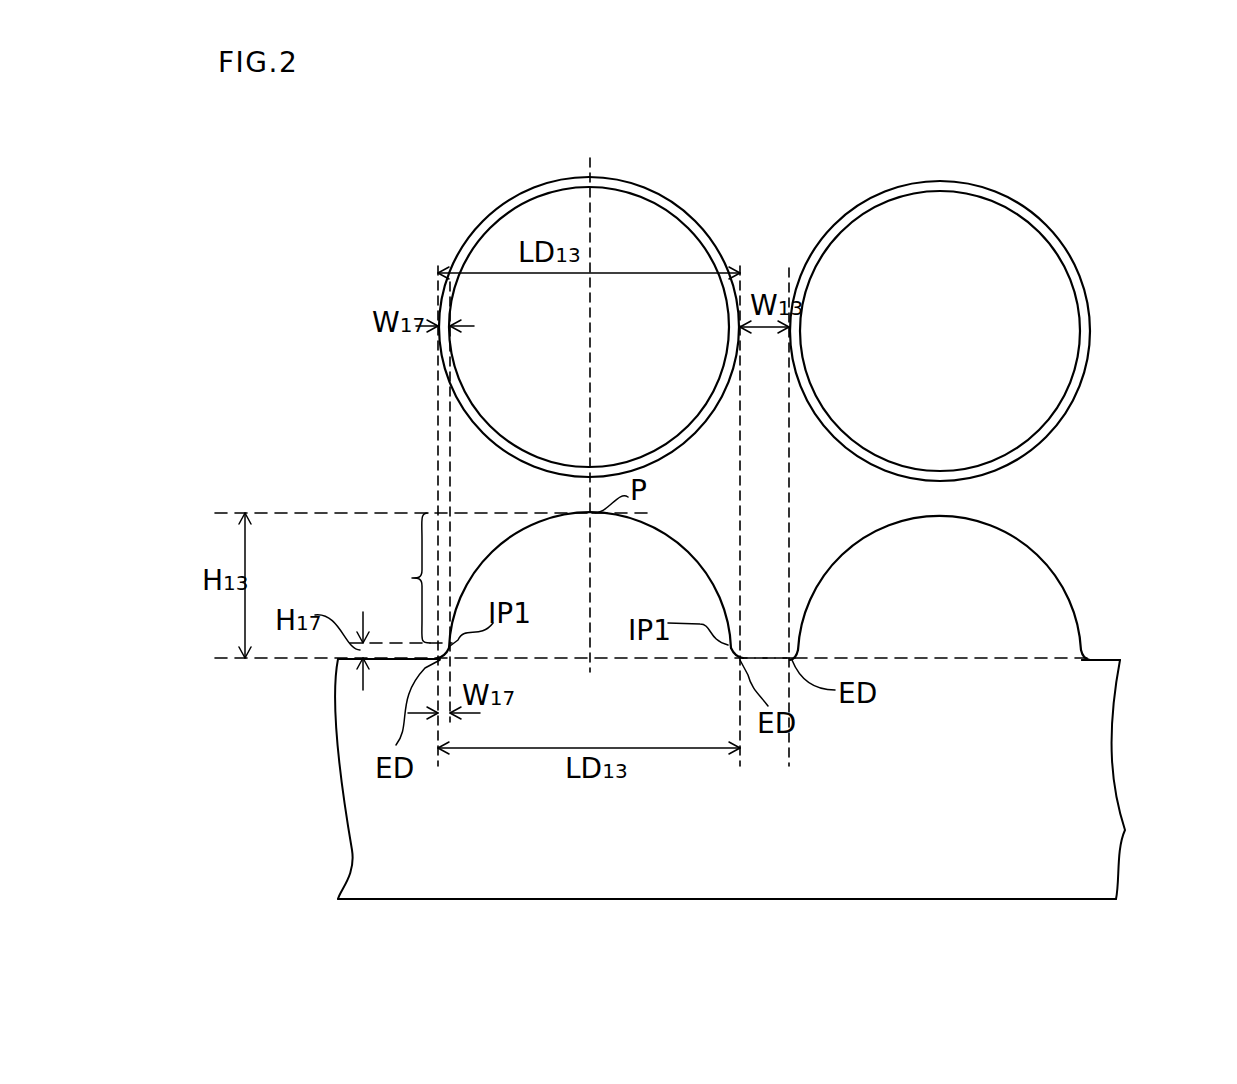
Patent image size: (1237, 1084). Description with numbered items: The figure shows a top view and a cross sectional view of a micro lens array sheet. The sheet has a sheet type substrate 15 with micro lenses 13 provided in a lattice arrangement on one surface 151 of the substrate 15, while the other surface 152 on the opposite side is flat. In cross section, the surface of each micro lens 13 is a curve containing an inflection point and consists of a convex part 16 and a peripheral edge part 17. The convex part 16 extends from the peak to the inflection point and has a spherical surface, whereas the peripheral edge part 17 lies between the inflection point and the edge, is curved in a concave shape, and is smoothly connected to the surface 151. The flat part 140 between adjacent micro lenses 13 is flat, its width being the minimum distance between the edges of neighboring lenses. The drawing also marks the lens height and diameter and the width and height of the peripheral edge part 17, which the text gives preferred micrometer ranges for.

The micro lens 13 is at (750, 402).
The convex part 16 is at (636, 217).
The peripheral edge part 17 is at (698, 229).
The substrate 15 is at (767, 774).
The surface 151 is at (1107, 660).
The other surface 152 is at (1097, 904).
The flat part 140 is at (770, 662).